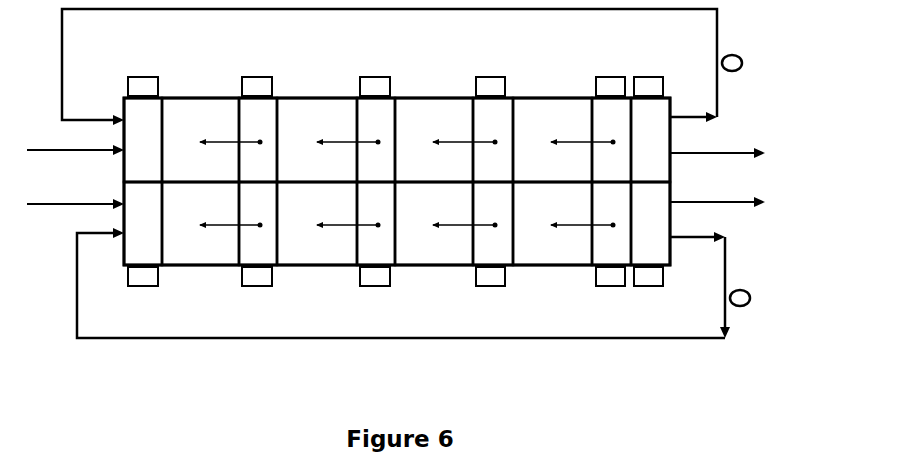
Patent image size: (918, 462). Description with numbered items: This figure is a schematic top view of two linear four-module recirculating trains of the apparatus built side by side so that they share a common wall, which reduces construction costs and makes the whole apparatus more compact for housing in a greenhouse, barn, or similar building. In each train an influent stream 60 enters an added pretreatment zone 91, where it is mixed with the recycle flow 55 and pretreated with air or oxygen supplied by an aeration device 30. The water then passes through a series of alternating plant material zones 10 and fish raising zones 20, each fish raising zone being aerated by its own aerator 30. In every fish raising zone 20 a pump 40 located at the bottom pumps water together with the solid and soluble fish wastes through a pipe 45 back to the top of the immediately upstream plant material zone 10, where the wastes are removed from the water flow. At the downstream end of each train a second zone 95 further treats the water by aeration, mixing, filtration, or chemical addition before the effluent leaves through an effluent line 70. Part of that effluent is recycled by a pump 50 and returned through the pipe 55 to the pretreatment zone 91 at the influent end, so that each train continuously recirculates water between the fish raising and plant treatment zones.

The plant material zone 10 is at (377, 181).
The fish raising zone 20 is at (435, 181).
The aerator 30 is at (395, 181).
The pump 40 is at (434, 195).
The pipe 45 is at (406, 194).
The pump 50 is at (751, 180).
The recycle pipe 55 is at (396, 187).
The influent stream 60 is at (75, 187).
The effluent line 70 is at (717, 186).
The pretreatment zone 91 is at (143, 181).
The second zone 95 is at (650, 181).